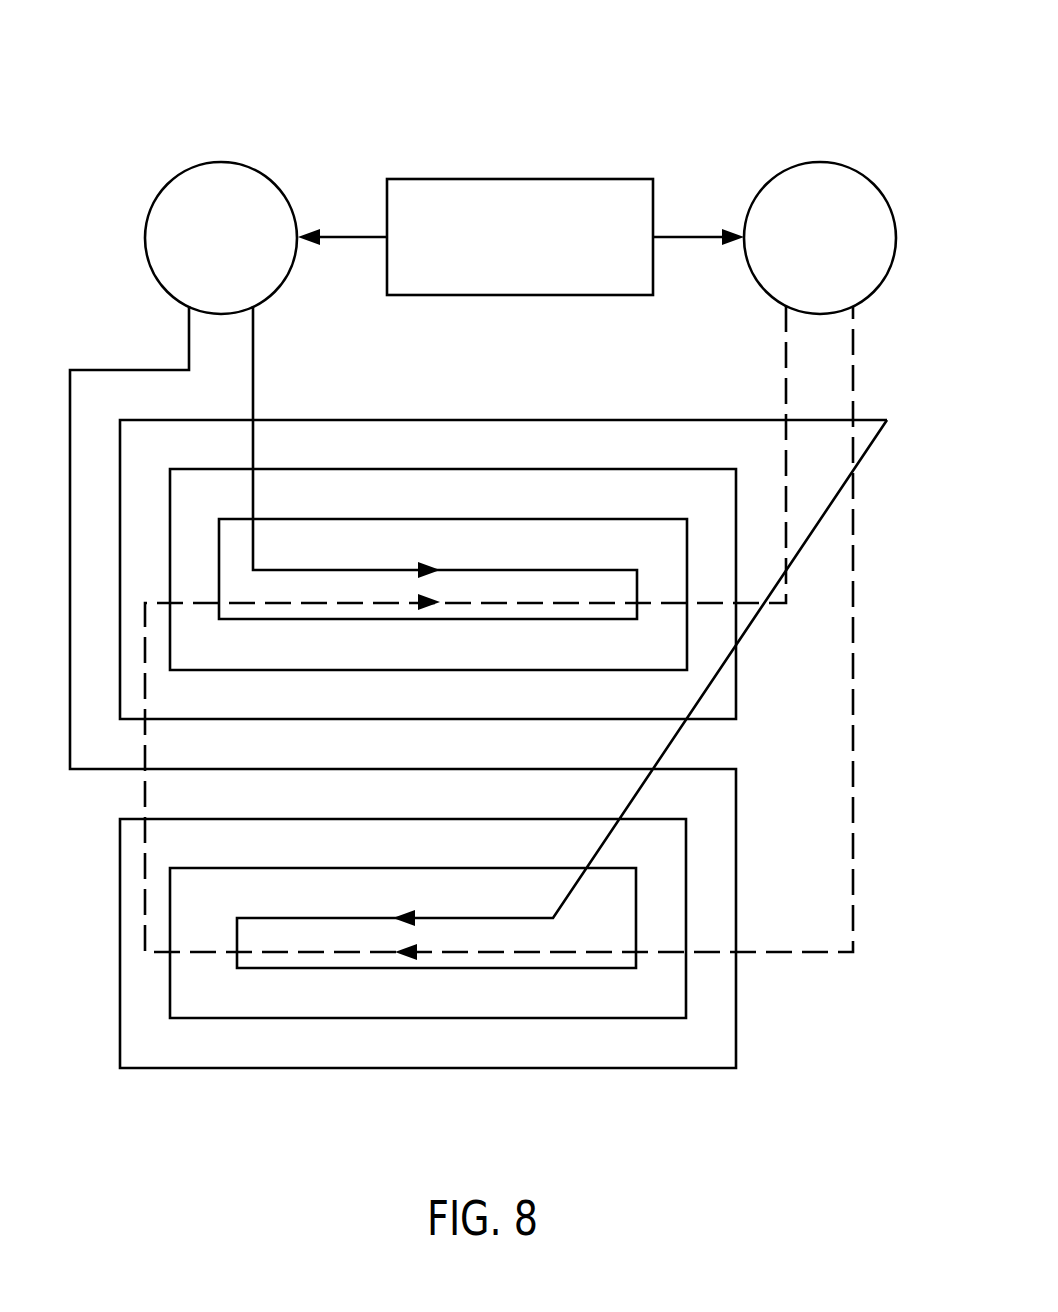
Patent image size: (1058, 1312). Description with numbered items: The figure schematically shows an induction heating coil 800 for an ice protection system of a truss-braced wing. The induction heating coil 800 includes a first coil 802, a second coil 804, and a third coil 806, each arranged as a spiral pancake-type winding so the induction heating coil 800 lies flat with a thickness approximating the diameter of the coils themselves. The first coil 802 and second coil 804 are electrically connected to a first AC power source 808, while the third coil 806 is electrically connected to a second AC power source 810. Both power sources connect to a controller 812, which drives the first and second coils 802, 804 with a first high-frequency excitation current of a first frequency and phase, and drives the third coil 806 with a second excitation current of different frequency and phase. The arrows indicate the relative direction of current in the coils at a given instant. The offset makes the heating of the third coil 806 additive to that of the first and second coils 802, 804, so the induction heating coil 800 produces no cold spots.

The induction heating coil 800 is at (808, 92).
The first coil 802 is at (595, 420).
The second coil 804 is at (408, 1070).
The third coil 806 is at (752, 953).
The first AC power source 808 is at (222, 162).
The second AC power source 810 is at (820, 163).
The controller 812 is at (540, 179).